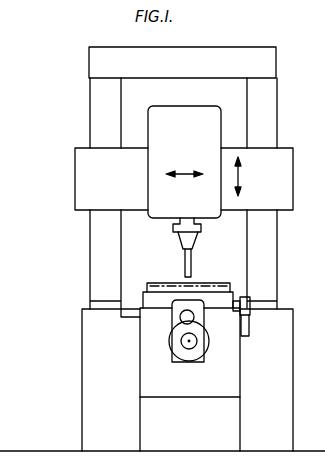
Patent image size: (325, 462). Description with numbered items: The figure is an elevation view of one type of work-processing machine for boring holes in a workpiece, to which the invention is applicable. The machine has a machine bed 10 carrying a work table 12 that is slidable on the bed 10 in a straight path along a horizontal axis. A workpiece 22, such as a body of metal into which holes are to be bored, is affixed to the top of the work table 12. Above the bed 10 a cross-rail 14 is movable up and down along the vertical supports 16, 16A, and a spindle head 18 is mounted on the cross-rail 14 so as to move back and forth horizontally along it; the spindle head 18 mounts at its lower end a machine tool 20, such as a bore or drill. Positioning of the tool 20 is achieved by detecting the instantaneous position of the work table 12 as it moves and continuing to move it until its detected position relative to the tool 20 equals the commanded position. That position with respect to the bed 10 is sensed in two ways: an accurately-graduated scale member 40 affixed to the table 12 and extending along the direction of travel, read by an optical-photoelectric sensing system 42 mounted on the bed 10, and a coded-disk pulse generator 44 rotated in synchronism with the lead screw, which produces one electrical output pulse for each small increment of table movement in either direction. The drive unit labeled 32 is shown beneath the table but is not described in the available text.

The machine bed 10 is at (290, 424).
The work table 12 is at (232, 296).
The cross-rail 14 is at (293, 178).
The vertical support 16 is at (277, 114).
The vertical support 16A is at (89, 99).
The spindle head 18 is at (150, 179).
The machine tool 20 is at (195, 272).
The workpiece 22 is at (160, 277).
The drive / motor unit 32 is at (188, 362).
The scale member 40 is at (241, 297).
The optical-photoelectric sensing system 42 is at (248, 333).
The coded-disk pulse generator 44 is at (181, 318).